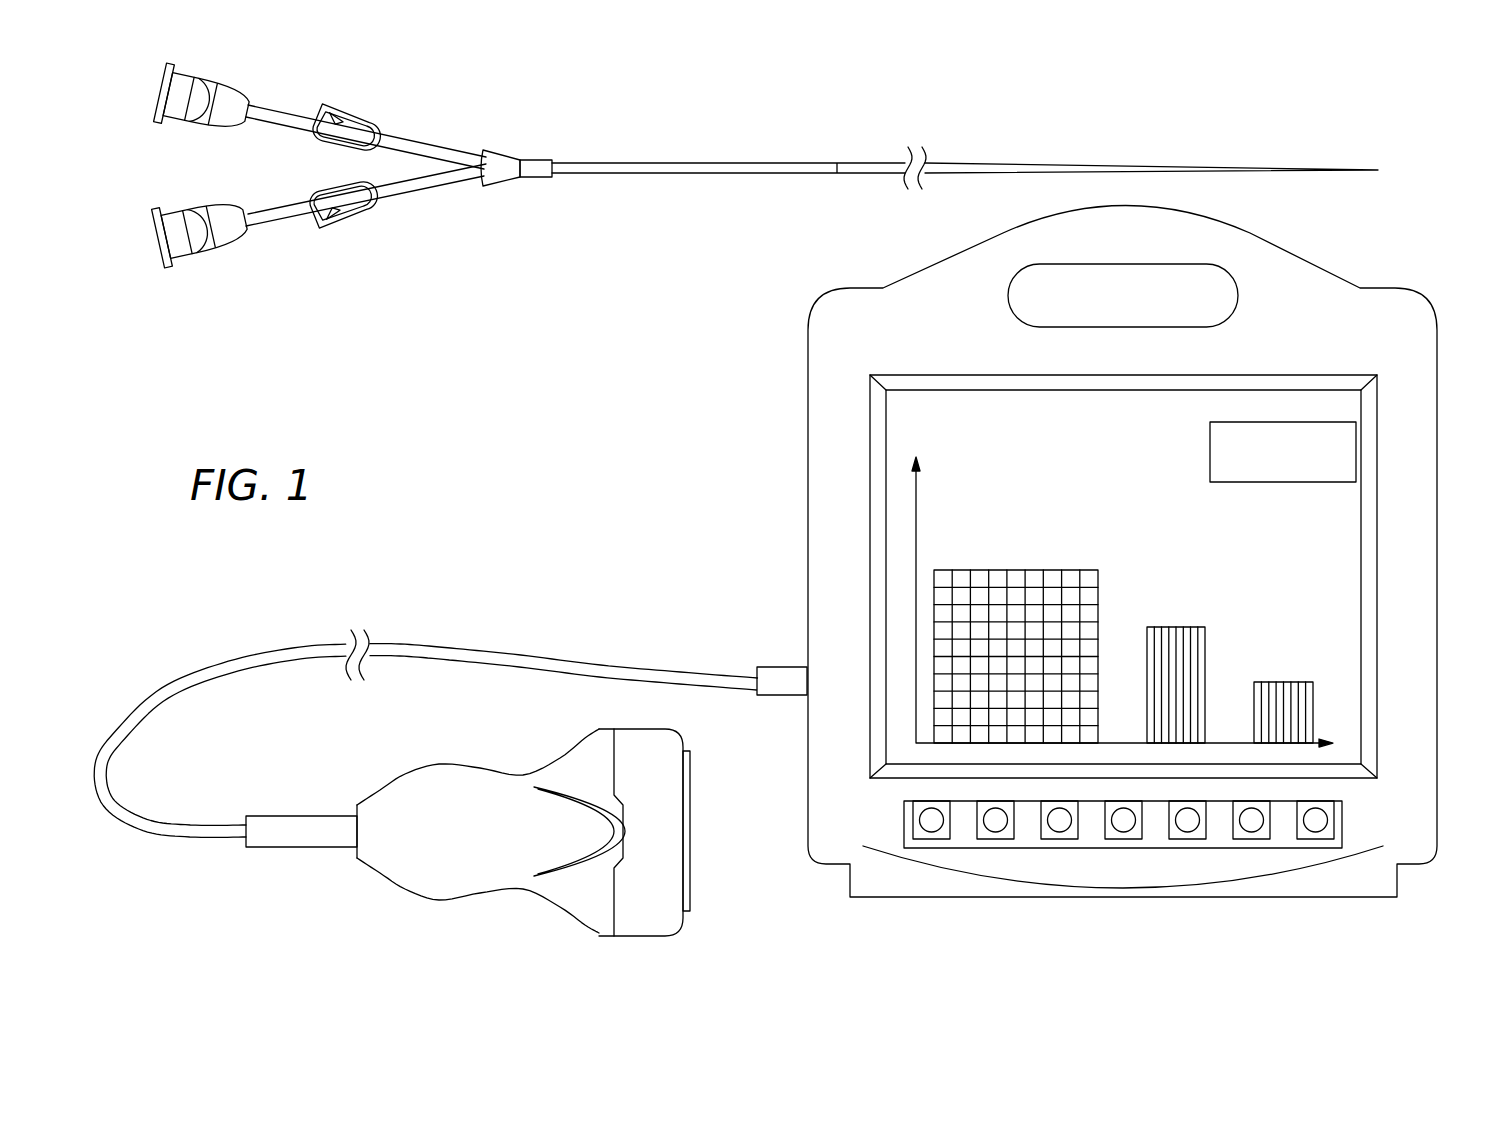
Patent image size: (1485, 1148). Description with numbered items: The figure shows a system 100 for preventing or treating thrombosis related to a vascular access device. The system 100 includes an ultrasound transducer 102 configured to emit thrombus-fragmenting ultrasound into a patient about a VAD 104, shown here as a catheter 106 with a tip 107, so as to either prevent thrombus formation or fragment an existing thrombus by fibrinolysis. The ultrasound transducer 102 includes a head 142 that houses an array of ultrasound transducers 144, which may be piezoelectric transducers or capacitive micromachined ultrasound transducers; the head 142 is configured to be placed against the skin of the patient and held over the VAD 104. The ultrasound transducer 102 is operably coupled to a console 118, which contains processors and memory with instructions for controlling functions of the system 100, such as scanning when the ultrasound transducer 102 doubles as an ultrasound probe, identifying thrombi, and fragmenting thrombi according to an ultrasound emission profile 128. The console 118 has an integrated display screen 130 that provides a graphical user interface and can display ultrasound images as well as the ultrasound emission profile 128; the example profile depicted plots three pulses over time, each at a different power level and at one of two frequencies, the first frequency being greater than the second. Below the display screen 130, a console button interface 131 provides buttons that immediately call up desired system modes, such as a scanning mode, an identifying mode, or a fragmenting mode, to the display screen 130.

The system 100 is at (741, 222).
The ultrasound transducer 102 is at (405, 909).
The VAD 104 is at (556, 145).
The catheter 106 is at (973, 144).
The tip 107 is at (1377, 169).
The console 118 is at (1378, 268).
The ultrasound emission profile 128 is at (966, 400).
The display screen 130 is at (897, 577).
The console button interface 131 is at (1350, 824).
The head 142 is at (617, 721).
The array of ultrasound transducers 144 is at (690, 795).